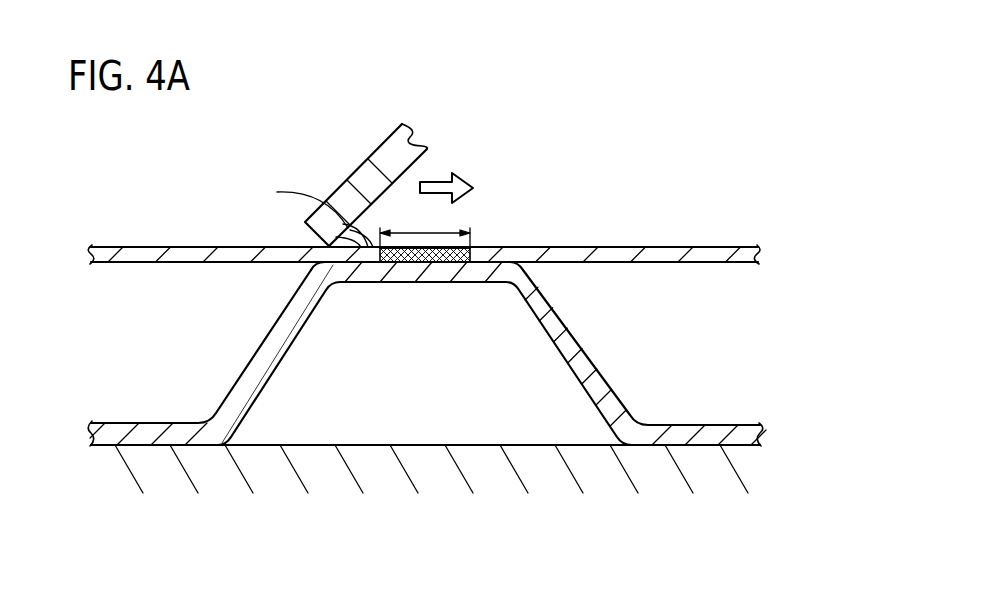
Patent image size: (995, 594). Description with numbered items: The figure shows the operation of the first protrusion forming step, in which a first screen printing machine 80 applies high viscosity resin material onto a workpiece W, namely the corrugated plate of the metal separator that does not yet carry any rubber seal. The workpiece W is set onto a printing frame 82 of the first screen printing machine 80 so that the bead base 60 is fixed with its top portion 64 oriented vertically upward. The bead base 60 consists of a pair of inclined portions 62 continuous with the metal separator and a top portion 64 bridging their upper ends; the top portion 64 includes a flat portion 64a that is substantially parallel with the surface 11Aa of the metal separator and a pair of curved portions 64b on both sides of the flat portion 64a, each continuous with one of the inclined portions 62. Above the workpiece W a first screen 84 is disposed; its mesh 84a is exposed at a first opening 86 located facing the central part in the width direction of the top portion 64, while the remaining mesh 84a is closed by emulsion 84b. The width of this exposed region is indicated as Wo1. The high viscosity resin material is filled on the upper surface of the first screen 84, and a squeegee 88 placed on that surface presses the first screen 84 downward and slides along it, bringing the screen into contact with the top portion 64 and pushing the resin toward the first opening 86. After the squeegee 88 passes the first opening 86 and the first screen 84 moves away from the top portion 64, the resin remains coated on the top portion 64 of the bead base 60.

The first screen printing machine 80 is at (520, 106).
The squeegee 88 is at (390, 153).
The first screen 84 is at (424, 247).
The mesh 84a is at (461, 218).
The emulsion 84b is at (620, 253).
The first opening 86 is at (487, 244).
The width of resin bead Wo1 is at (425, 229).
The bead base 60 is at (427, 354).
The inclined portions 62 is at (240, 400).
The top portion 64 is at (425, 353).
The flat portion 64a is at (425, 275).
The curved portions 64b is at (328, 275).
The workpiece W is at (143, 326).
The surface of the metal separator 11Aa is at (116, 408).
The printing frame 82 is at (300, 445).